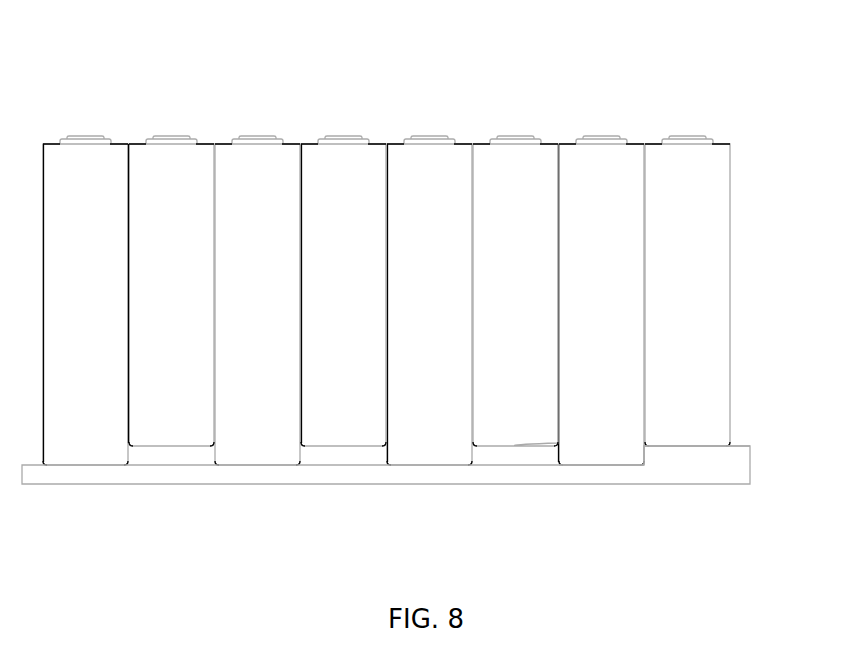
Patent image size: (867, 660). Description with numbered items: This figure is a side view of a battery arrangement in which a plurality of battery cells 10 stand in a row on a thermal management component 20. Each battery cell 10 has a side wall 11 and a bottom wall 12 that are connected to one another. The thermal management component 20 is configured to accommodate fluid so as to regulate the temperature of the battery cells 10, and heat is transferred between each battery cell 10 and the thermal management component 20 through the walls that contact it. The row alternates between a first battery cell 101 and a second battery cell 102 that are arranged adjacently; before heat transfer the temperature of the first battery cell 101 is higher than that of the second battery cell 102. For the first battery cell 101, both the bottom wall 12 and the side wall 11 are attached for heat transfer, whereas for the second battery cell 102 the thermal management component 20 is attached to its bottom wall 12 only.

The battery cell 10 is at (119, 67).
The first battery cell 101 is at (79, 193).
The second battery cell 102 is at (160, 193).
The side wall 11 is at (646, 452).
The bottom wall 12 is at (614, 467).
The thermal management component 20 is at (727, 460).